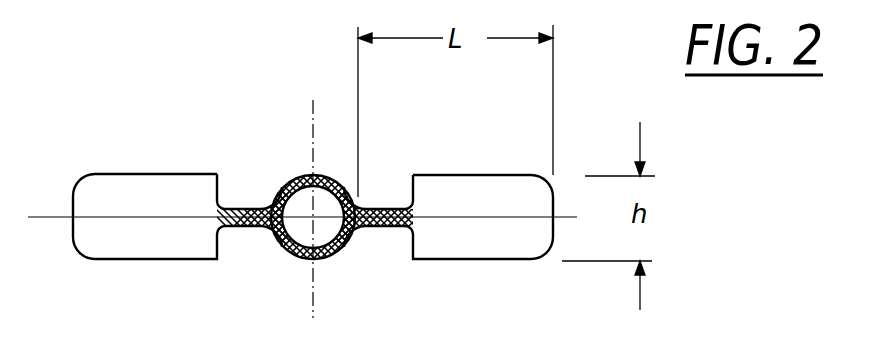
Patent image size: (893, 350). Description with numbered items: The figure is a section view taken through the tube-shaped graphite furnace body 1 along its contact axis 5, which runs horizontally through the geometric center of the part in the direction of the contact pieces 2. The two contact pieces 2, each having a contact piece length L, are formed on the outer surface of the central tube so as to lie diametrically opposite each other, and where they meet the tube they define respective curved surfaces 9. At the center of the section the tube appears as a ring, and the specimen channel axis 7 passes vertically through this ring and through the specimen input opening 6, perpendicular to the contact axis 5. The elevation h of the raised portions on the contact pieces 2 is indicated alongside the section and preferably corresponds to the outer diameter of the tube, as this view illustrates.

The furnace body 1 is at (170, 157).
The contact pieces 2 is at (138, 247).
The contact axis 5 is at (48, 218).
The specimen input opening 6 is at (309, 176).
The specimen channel axis 7 is at (316, 297).
The curved surfaces 9 is at (218, 206).